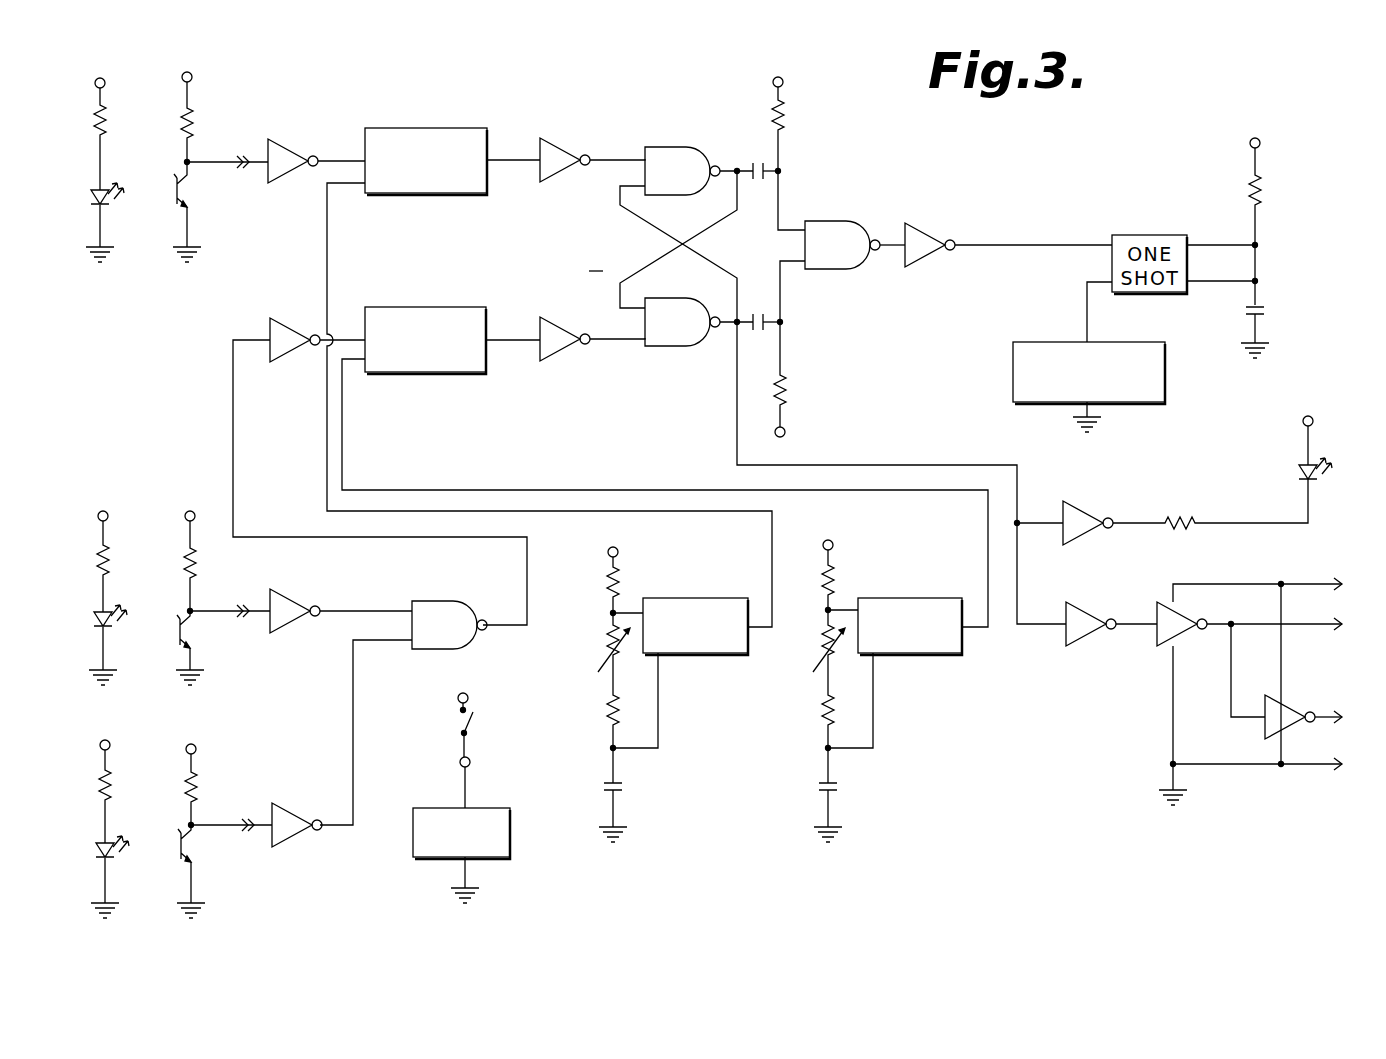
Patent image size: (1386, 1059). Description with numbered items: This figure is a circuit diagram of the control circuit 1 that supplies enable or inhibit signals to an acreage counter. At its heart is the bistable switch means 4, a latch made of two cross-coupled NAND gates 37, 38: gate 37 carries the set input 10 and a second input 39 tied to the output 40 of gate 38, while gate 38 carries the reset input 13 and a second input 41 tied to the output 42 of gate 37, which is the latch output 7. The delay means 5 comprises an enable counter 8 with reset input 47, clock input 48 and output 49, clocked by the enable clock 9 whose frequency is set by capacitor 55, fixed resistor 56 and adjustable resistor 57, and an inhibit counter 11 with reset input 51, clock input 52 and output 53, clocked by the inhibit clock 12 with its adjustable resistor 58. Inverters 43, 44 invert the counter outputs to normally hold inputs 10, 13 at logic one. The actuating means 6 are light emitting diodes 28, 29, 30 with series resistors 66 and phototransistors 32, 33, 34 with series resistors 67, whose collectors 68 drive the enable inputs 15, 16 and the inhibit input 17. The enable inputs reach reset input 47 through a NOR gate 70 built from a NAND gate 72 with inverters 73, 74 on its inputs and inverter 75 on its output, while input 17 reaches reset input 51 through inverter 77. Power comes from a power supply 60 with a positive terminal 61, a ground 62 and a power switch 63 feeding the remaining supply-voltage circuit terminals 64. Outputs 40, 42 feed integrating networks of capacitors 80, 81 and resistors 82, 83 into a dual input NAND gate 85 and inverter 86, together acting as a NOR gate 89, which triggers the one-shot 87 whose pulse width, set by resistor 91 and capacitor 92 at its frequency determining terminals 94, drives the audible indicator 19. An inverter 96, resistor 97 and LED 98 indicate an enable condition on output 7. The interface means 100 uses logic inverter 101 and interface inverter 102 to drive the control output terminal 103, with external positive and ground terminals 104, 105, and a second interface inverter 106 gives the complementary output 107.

The control circuit 1 is at (997, 772).
The bistable switch means 4 is at (596, 262).
The delay means 5 is at (583, 464).
The actuating means 6 is at (185, 619).
The output 7 is at (737, 382).
The enable counter 8 is at (486, 372).
The enable delay clock 9 is at (935, 598).
The set input 10 is at (615, 340).
The inhibit counter 11 is at (426, 128).
The inhibit delay clock 12 is at (740, 598).
The reset input 13 is at (598, 158).
The enable input 15 is at (253, 608).
The enable input 16 is at (255, 820).
The inhibit input 17 is at (258, 158).
The audible indicator 19 is at (1013, 342).
The light emitting diode 28 is at (90, 200).
The light emitting diode 29 is at (93, 619).
The light emitting diode 30 is at (93, 850).
The phototransistor 32 is at (190, 205).
The phototransistor 33 is at (192, 640).
The phototransistor 34 is at (192, 855).
The NAND gate 37 is at (668, 346).
The NAND gate 38 is at (670, 147).
The second input 39 is at (618, 312).
The output 40 is at (735, 168).
The second input 41 is at (635, 190).
The output 42 is at (718, 315).
The inverter 43 is at (550, 350).
The inverter 44 is at (560, 140).
The reset input 47 is at (345, 335).
The clock input 48 is at (356, 365).
The output 49 is at (500, 338).
The reset input 51 is at (333, 158).
The clock input 52 is at (335, 190).
The output 53 is at (520, 162).
The capacitor 55 is at (838, 787).
The fixed resistor 56 is at (820, 733).
The adjustable resistor 57 is at (820, 636).
The adjustable resistor 58 is at (603, 636).
The power supply 60 is at (510, 808).
The positive terminal 61 is at (459, 762).
The ground 62 is at (672, 571).
The power switch 63 is at (472, 722).
The circuit terminals 64 is at (686, 411).
The series resistors 66 is at (81, 452).
The series resistors 67 is at (208, 343).
The collectors 68 is at (203, 510).
The NOR gate 70 is at (373, 600).
The NAND gate 72 is at (462, 602).
The inverter 73 is at (300, 625).
The inverter 74 is at (292, 815).
The inverter 75 is at (298, 320).
The inverter 77 is at (295, 178).
The capacitor 80 is at (763, 178).
The capacitor 81 is at (760, 314).
The resistor 82 is at (785, 115).
The resistor 83 is at (787, 385).
The dual input NAND gate 85 is at (840, 222).
The inverter 86 is at (935, 232).
The one-shot 87 is at (1110, 235).
The NOR gate 89 is at (852, 272).
The resistor 91 is at (1248, 190).
The capacitor 92 is at (1262, 308).
The frequency determining terminals 94 is at (1230, 278).
The inverter 96 is at (1080, 512).
The resistor 97 is at (1190, 518).
The LED 98 is at (1298, 470).
The interface means 100 is at (1124, 691).
The logic inverter 101 is at (1085, 612).
The interface inverter 102 is at (1158, 640).
The control output terminal 103 is at (1325, 627).
The positive terminal 104 is at (1305, 583).
The ground terminal 105 is at (1310, 766).
The second interface inverter 106 is at (1292, 710).
The output 107 is at (1325, 721).